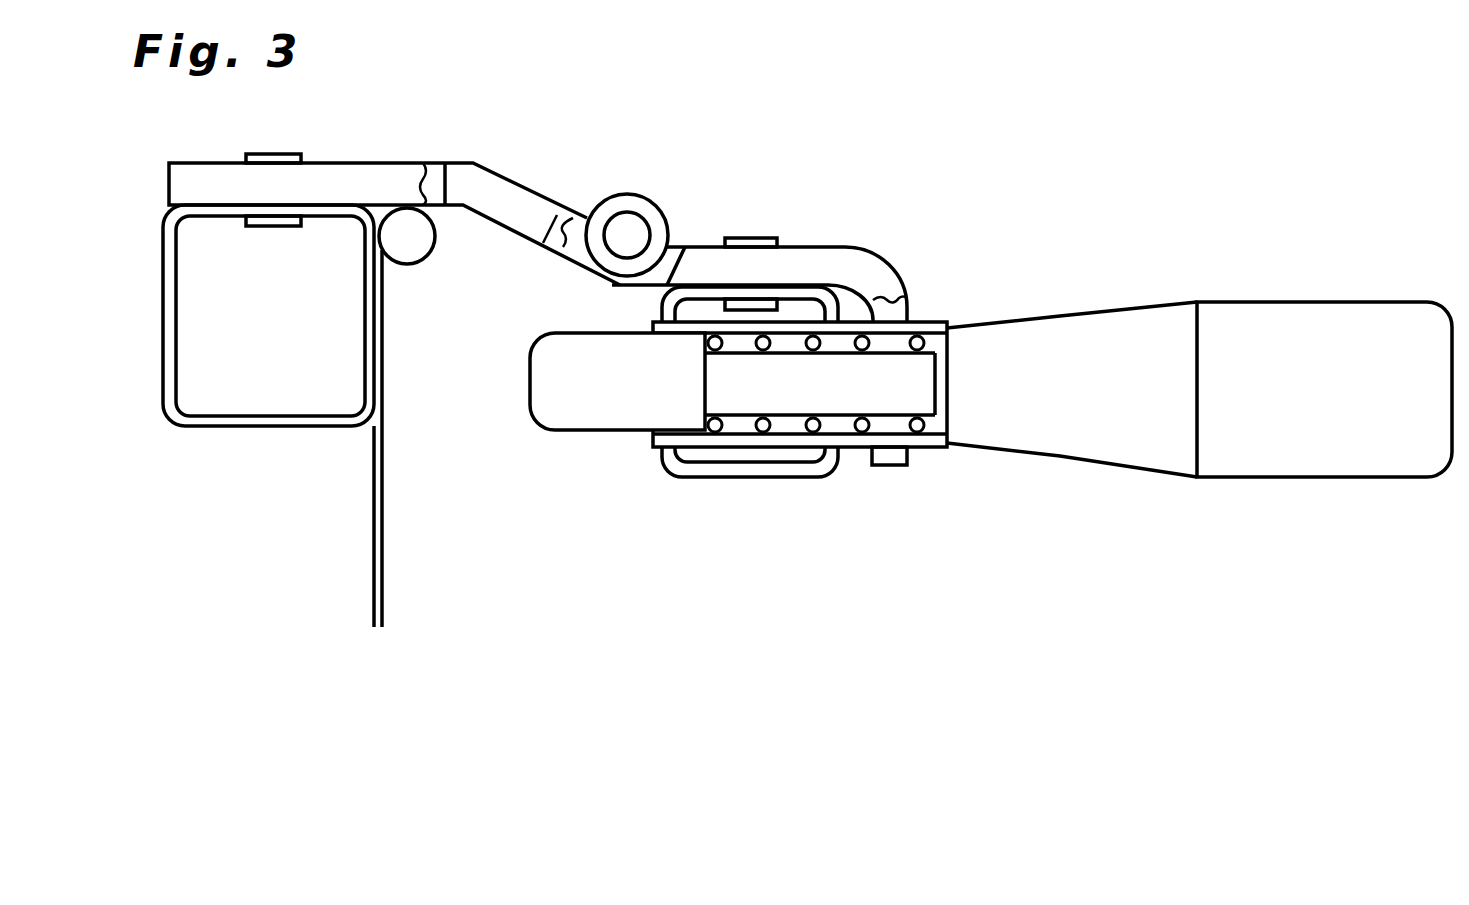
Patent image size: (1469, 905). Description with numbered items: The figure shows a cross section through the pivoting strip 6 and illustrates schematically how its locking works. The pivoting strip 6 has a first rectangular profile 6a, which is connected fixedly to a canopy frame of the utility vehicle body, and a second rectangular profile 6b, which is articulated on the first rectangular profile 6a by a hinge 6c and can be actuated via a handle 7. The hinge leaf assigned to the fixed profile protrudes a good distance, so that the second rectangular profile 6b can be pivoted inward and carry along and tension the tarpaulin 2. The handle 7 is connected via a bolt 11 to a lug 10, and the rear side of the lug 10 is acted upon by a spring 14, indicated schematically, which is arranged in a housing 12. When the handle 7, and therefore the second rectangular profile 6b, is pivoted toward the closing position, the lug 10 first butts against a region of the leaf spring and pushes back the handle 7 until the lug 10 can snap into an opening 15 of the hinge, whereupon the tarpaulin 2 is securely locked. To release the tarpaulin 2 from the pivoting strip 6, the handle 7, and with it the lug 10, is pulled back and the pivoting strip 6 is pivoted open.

The tarpaulin 2 is at (372, 592).
The pivoting strip 6 is at (457, 416).
The first rectangular profile 6a is at (238, 422).
The second rectangular profile 6b is at (803, 468).
The hinge 6c is at (650, 191).
The handle 7 is at (1320, 325).
The lug 10 is at (590, 402).
The bolt 11 is at (745, 398).
The housing 12 is at (918, 327).
The spring 14 is at (861, 431).
The opening 15 is at (523, 210).